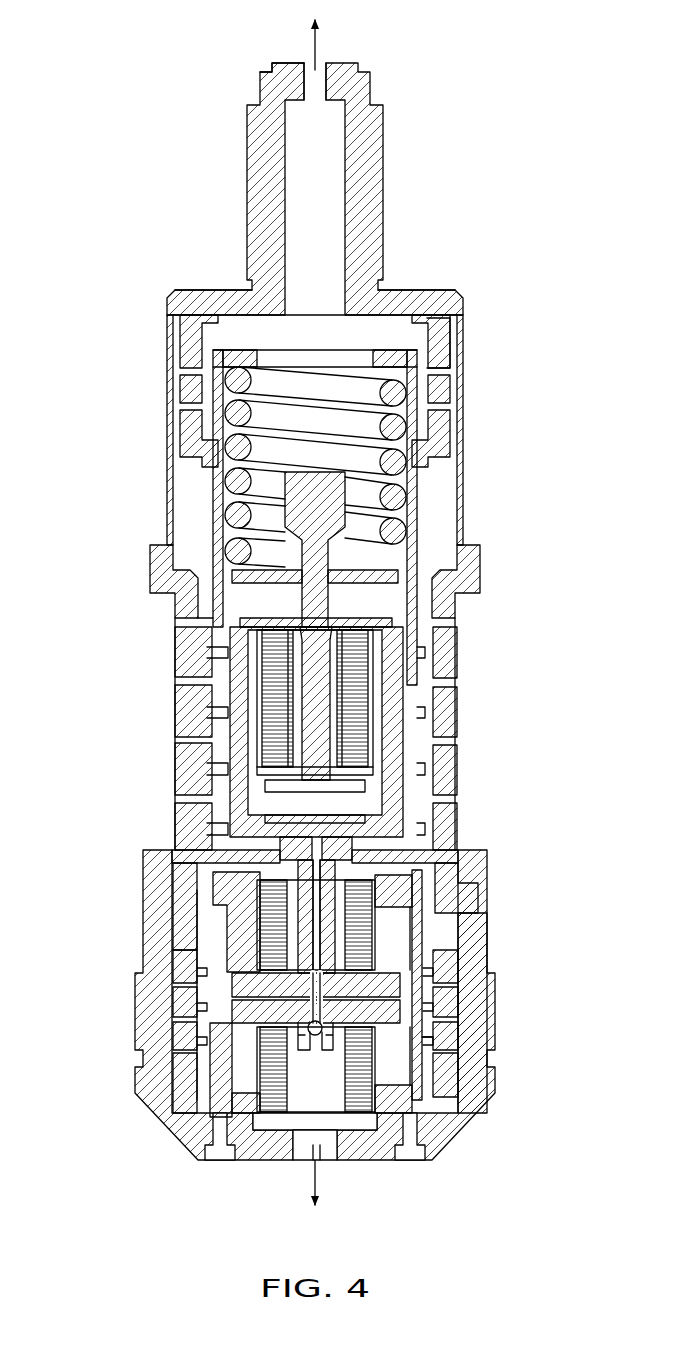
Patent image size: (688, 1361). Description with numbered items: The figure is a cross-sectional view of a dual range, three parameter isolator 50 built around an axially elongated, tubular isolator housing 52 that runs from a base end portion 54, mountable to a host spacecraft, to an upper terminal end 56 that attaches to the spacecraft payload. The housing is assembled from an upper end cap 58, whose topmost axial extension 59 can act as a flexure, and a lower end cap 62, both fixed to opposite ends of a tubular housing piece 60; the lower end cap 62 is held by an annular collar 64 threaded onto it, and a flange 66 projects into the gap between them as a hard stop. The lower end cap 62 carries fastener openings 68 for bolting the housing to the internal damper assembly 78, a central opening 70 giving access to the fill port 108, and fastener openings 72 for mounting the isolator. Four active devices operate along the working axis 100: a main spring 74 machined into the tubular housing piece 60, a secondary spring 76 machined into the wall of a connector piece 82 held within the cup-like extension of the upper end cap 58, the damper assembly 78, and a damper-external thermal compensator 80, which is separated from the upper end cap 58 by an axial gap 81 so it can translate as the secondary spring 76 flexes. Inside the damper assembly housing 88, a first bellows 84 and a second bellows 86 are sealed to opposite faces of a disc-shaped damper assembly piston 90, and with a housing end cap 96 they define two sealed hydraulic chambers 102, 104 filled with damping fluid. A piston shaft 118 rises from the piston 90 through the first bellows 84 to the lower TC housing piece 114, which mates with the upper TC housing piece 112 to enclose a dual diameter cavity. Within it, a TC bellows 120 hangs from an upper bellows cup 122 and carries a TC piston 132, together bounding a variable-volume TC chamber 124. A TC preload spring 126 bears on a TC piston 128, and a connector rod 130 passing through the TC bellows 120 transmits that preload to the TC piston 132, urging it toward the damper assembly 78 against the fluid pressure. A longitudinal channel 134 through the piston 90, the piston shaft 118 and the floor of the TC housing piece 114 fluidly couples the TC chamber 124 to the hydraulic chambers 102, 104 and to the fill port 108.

The three parameter isolator 50 is at (178, 160).
The isolator housing 52 is at (478, 483).
The base end portion 54 is at (460, 1128).
The upper terminal end 56 is at (370, 90).
The upper end cap 58 is at (457, 298).
The axial extension 59 is at (372, 185).
The tubular housing piece 60 is at (452, 607).
The lower end cap 62 is at (472, 965).
The annular collar 64 is at (485, 850).
The flange 66 is at (475, 900).
The fastener openings 68 is at (222, 1162).
The central opening 70 is at (300, 1162).
The fastener openings 72 is at (320, 68).
The main spring 74 is at (78, 605).
The secondary spring 76 is at (153, 328).
The damper assembly 78 is at (427, 1008).
The thermal compensator 80 is at (413, 690).
The axial gap 81 is at (390, 325).
The connector piece 82 is at (447, 340).
The first bellows 84 is at (230, 915).
The second bellows 86 is at (240, 1058).
The damper assembly housing 88 is at (417, 1040).
The damper assembly piston 90 is at (238, 998).
The housing end cap 96 is at (215, 883).
The working axis 100 is at (313, 42).
The hydraulic chamber 102 is at (392, 942).
The hydraulic chamber 104 is at (392, 1077).
The fill port 108 is at (325, 1048).
The TC housing piece 112 is at (217, 518).
The lower TC housing piece 114 is at (395, 750).
The piston shaft 118 is at (248, 863).
The TC bellows 120 is at (275, 668).
The upper bellows cup 122 is at (240, 620).
The TC chamber 124 is at (295, 798).
The TC preload spring 126 is at (397, 462).
The TC piston 128 is at (343, 585).
The connector rod 130 is at (312, 705).
The TC piston 132 is at (317, 783).
The longitudinal channel 134 is at (247, 947).